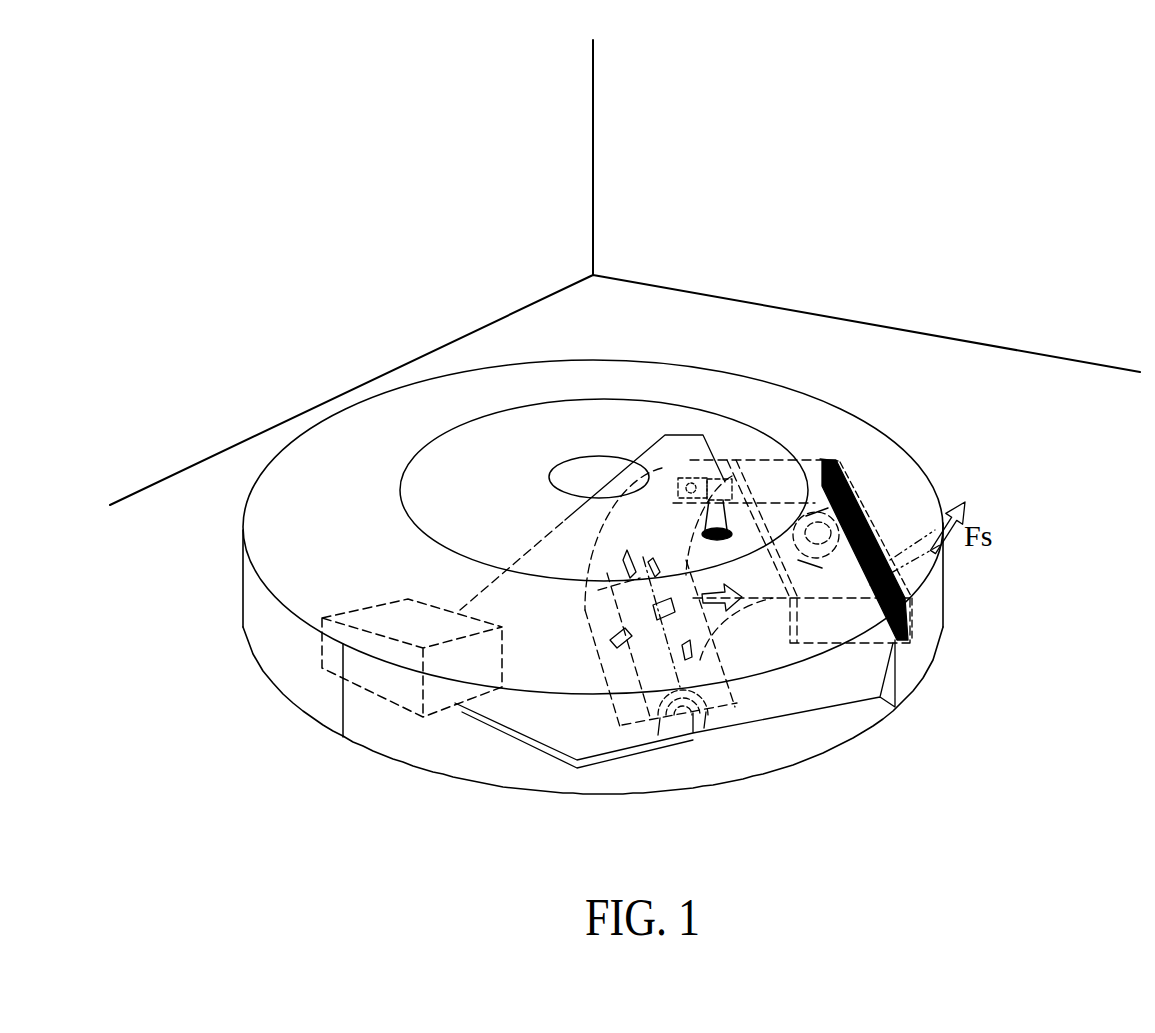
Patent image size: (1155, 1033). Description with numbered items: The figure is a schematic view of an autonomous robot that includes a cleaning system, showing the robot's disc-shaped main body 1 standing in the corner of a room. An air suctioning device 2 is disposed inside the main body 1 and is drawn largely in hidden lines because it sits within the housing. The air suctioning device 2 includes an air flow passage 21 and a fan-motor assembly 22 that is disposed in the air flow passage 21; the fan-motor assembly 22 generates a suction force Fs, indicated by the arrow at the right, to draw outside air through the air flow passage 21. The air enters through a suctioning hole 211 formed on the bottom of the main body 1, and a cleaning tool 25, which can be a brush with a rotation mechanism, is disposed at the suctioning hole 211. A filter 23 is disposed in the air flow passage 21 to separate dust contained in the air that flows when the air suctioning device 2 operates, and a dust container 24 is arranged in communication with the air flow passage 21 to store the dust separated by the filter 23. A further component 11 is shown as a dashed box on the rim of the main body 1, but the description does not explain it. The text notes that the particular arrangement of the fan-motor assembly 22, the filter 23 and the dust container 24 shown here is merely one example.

The main body 1 is at (372, 411).
The functional module on body 11 is at (364, 606).
The air suctioning device 2 is at (697, 618).
The air flow passage 21 is at (677, 471).
The suctioning hole 211 is at (632, 721).
The fan-motor assembly 22 is at (832, 490).
The filter 23 is at (831, 462).
The dust container 24 is at (821, 460).
The cleaning tool 25 is at (628, 600).